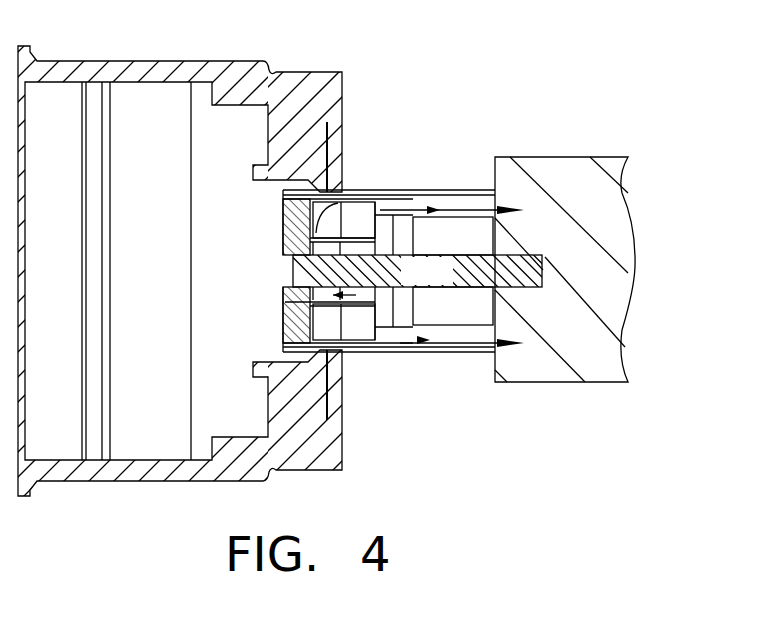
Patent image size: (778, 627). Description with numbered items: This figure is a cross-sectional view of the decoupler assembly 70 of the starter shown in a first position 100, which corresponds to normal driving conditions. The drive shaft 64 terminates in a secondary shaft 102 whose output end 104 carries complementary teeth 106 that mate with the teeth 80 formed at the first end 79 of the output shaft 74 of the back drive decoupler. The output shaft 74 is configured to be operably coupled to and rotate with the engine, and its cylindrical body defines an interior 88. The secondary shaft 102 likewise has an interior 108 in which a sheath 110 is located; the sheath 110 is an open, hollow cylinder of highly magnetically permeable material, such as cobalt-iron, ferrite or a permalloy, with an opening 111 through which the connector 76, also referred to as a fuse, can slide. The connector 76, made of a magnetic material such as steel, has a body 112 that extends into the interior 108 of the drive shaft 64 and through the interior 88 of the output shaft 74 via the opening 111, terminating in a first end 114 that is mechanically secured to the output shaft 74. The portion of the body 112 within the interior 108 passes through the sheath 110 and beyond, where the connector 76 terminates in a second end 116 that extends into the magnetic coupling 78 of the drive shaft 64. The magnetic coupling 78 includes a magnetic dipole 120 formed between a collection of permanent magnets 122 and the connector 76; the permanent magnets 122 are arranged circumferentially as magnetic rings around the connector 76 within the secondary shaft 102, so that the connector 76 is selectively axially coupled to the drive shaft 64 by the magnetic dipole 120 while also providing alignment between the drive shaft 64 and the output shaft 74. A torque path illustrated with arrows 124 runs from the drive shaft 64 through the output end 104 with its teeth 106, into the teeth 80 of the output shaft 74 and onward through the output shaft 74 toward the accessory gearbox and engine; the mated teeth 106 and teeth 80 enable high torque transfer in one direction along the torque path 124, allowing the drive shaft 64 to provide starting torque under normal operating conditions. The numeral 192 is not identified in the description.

The drive shaft 64 is at (180, 62).
The decoupler assembly 70 is at (518, 34).
The first position 100 is at (472, 97).
The connector 76 is at (485, 205).
The permanent magnets 122 is at (288, 200).
The magnetic coupling 78 is at (284, 306).
The interior 108 is at (283, 325).
The magnetic dipole 120 is at (268, 246).
The body 112 is at (451, 283).
The second end 116 is at (292, 259).
The first end 114 is at (546, 260).
The interior 88 is at (466, 318).
The output end 104 is at (441, 192).
The complementary teeth 106 is at (403, 326).
The opening 111 is at (385, 315).
The teeth 80 is at (414, 345).
The first end 79 is at (466, 192).
The sheath 110 is at (350, 190).
The flange 192 is at (424, 192).
The secondary shaft 102 is at (348, 350).
The torque path 124 is at (497, 215).
The output shaft 74 is at (598, 360).